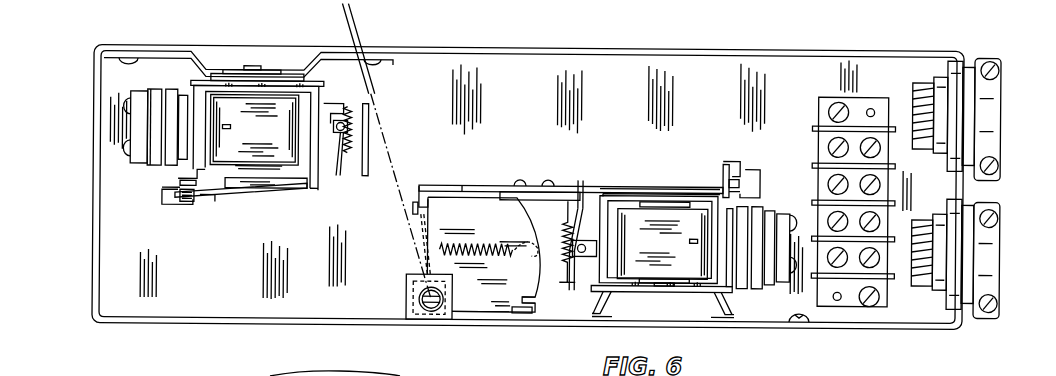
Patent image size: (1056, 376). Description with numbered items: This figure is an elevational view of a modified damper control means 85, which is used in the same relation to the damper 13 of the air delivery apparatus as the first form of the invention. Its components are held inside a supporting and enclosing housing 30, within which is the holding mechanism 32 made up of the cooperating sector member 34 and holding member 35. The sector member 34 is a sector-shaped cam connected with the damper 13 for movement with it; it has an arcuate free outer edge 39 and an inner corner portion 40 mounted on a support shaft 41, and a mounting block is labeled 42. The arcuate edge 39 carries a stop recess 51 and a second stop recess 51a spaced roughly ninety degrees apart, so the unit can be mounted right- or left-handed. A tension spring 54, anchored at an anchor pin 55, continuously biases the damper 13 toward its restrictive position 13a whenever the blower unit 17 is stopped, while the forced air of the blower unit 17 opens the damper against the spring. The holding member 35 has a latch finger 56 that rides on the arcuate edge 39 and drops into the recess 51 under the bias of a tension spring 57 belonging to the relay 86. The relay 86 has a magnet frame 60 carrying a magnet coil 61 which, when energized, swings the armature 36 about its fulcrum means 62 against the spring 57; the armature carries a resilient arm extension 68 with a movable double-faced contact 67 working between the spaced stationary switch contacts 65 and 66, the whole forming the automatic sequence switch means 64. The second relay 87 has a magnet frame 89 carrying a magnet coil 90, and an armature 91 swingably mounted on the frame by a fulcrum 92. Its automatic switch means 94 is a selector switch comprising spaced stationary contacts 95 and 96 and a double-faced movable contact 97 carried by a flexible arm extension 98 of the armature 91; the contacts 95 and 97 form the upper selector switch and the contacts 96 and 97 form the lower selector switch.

The damper 13 is at (350, 24).
The restrictive position of the damper 13a is at (395, 155).
The blower unit 17 is at (522, 370).
The housing 30 is at (722, 50).
The holding mechanism 32 is at (496, 187).
The sector member 34 is at (422, 226).
The holding member 35 is at (473, 172).
The armature 36 is at (635, 187).
The arcuate free outer edge 39 is at (497, 222).
The inner corner portion 40 is at (496, 308).
The support shaft 41 is at (430, 312).
The mounting block 42 is at (407, 297).
The stop recess 51 is at (413, 212).
The second stop recess 51a is at (522, 298).
The tension spring 54 is at (484, 242).
The anchor pin 55 is at (531, 253).
The latch finger 56 is at (434, 206).
The tension spring 57 is at (563, 241).
The magnet frame 60 is at (708, 292).
The magnet coil 61 is at (606, 268).
The fulcrum means 62 is at (603, 183).
The automatic sequence switch means 64 is at (753, 186).
The stationary switch contact 65 is at (737, 168).
The stationary switch contact 66 is at (742, 190).
The movable double-faced contact 67 is at (728, 189).
The resilient arm extension 68 is at (699, 185).
The damper control means 85 is at (607, 50).
The relay 86 is at (669, 181).
The relay 87 is at (251, 201).
The magnet frame 89 is at (241, 107).
The magnet coil 90 is at (292, 114).
The armature 91 is at (273, 190).
The fulcrum 92 is at (317, 192).
The automatic switch means 94 is at (165, 193).
The stationary contact 95 is at (197, 181).
The stationary contact 96 is at (182, 203).
The double-faced movable contact 97 is at (160, 200).
The flexible arm extension 98 is at (211, 200).